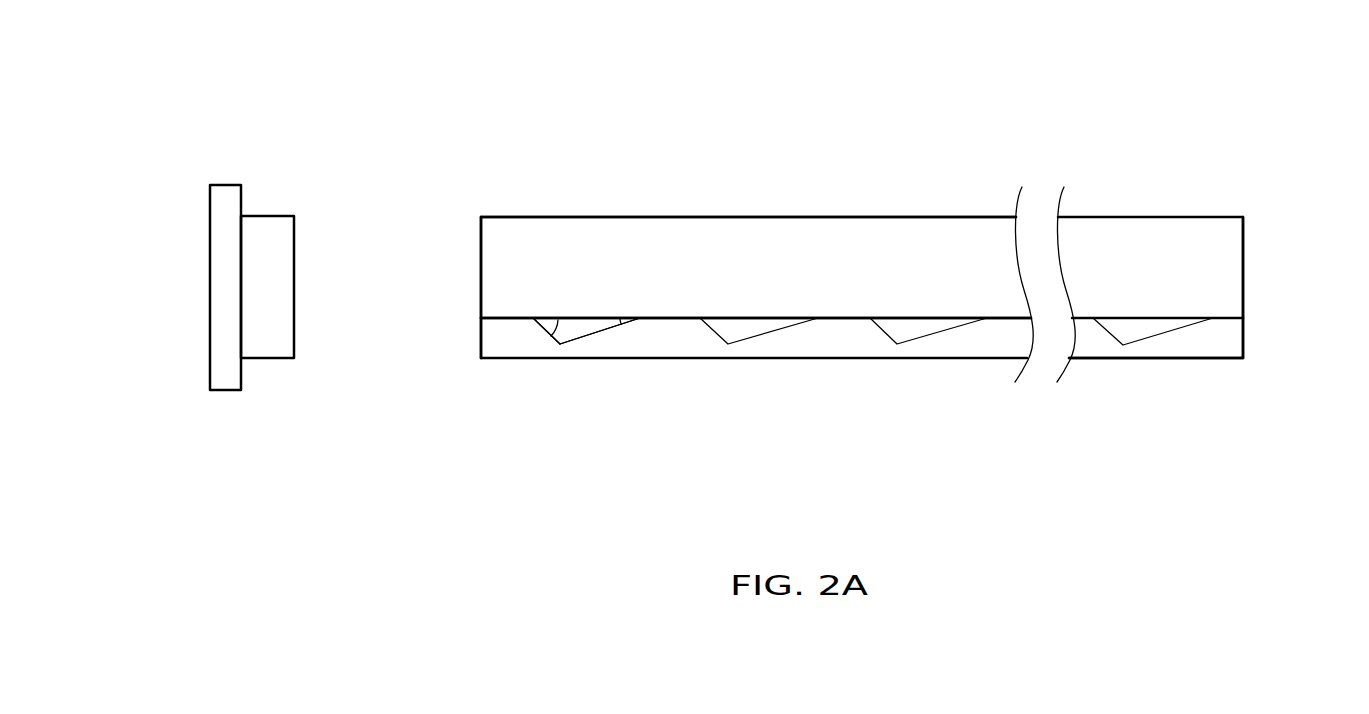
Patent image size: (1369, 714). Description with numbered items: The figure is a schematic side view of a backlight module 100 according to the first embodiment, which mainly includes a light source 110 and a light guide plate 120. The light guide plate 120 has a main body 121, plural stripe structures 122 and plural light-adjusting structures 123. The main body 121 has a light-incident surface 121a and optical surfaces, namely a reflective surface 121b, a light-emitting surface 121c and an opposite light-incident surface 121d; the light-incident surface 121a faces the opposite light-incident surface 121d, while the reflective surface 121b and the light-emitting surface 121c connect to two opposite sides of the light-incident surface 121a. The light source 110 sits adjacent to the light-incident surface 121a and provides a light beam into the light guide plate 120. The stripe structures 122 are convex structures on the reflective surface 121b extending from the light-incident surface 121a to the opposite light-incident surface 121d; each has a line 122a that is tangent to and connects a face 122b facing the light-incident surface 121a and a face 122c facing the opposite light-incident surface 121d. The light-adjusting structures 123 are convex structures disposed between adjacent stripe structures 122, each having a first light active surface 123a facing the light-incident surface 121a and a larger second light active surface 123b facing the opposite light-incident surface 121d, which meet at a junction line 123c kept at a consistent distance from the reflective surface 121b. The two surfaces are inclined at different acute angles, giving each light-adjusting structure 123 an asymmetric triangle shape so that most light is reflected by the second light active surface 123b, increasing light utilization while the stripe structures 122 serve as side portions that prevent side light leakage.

The backlight module 100 is at (197, 72).
The light source 110 is at (222, 286).
The light guide plate 120 is at (505, 178).
The main body 121 is at (802, 232).
The light-incident surface 121a is at (481, 295).
The reflective surface 121b is at (998, 318).
The light-emitting surface 121c is at (622, 217).
The opposite light-incident surface 121d is at (1243, 253).
The stripe structure 122 is at (847, 345).
The line 122a is at (1112, 358).
The face 122b is at (481, 337).
The face 122c is at (1243, 340).
The light-adjusting structure 123 is at (743, 330).
The first light active surface 123a is at (547, 320).
The second light active surface 123b is at (637, 320).
The junction line 123c is at (560, 344).